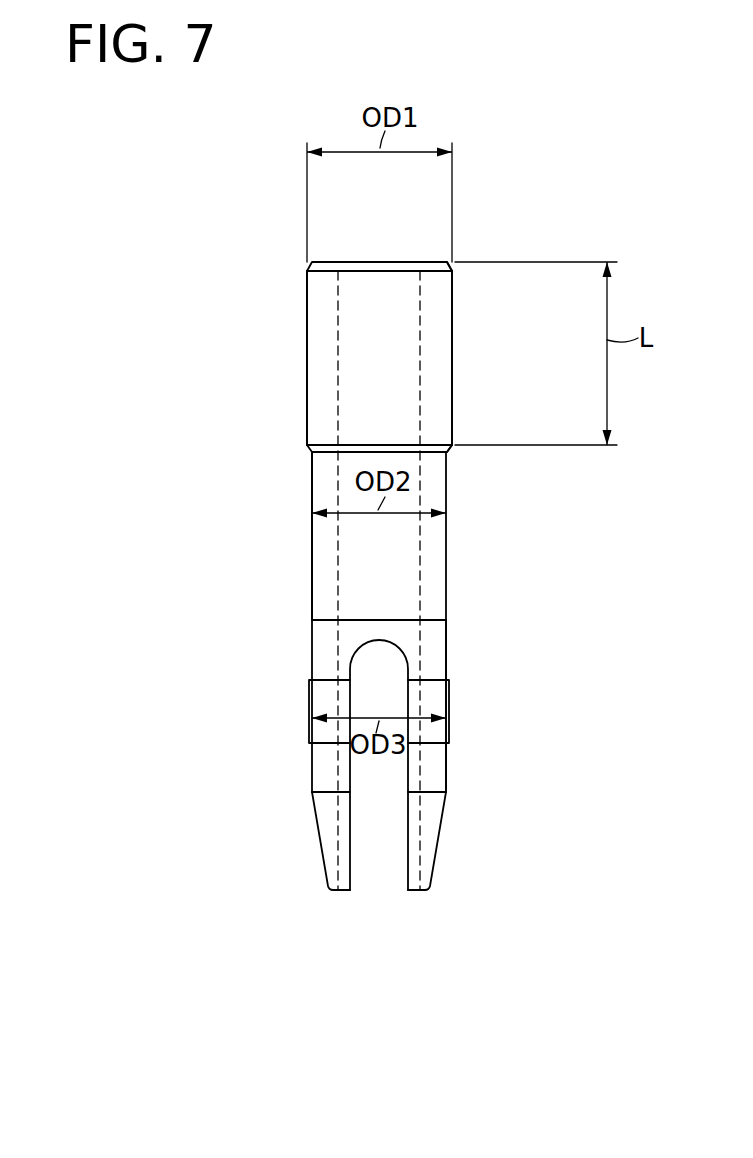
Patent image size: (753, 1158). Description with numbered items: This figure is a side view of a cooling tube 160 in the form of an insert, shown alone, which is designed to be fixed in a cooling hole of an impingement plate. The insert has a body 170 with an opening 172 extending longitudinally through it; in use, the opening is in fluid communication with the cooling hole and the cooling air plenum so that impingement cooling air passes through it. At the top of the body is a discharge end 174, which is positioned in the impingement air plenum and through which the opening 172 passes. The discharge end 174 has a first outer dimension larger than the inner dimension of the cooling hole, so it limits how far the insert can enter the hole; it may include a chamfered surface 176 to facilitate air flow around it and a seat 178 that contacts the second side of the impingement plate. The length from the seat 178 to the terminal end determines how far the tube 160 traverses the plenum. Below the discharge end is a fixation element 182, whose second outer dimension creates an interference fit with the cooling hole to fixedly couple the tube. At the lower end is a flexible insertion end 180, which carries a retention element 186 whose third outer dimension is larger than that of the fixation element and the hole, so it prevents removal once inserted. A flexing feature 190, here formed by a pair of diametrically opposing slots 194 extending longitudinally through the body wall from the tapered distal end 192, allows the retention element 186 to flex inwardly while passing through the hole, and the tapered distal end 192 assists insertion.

The cooling tube 160 is at (478, 358).
The body 170 is at (455, 566).
The opening 172 is at (340, 297).
The discharge end 174 is at (294, 265).
The chamfered surface 176 is at (433, 262).
The seat 178 is at (448, 463).
The flexible insertion end 180 is at (527, 625).
The fixation element 182 is at (294, 452).
The retention element 186 is at (309, 702).
The flexing feature 190 is at (374, 878).
The tapered distal end 192 is at (319, 840).
The slot 194 is at (388, 777).